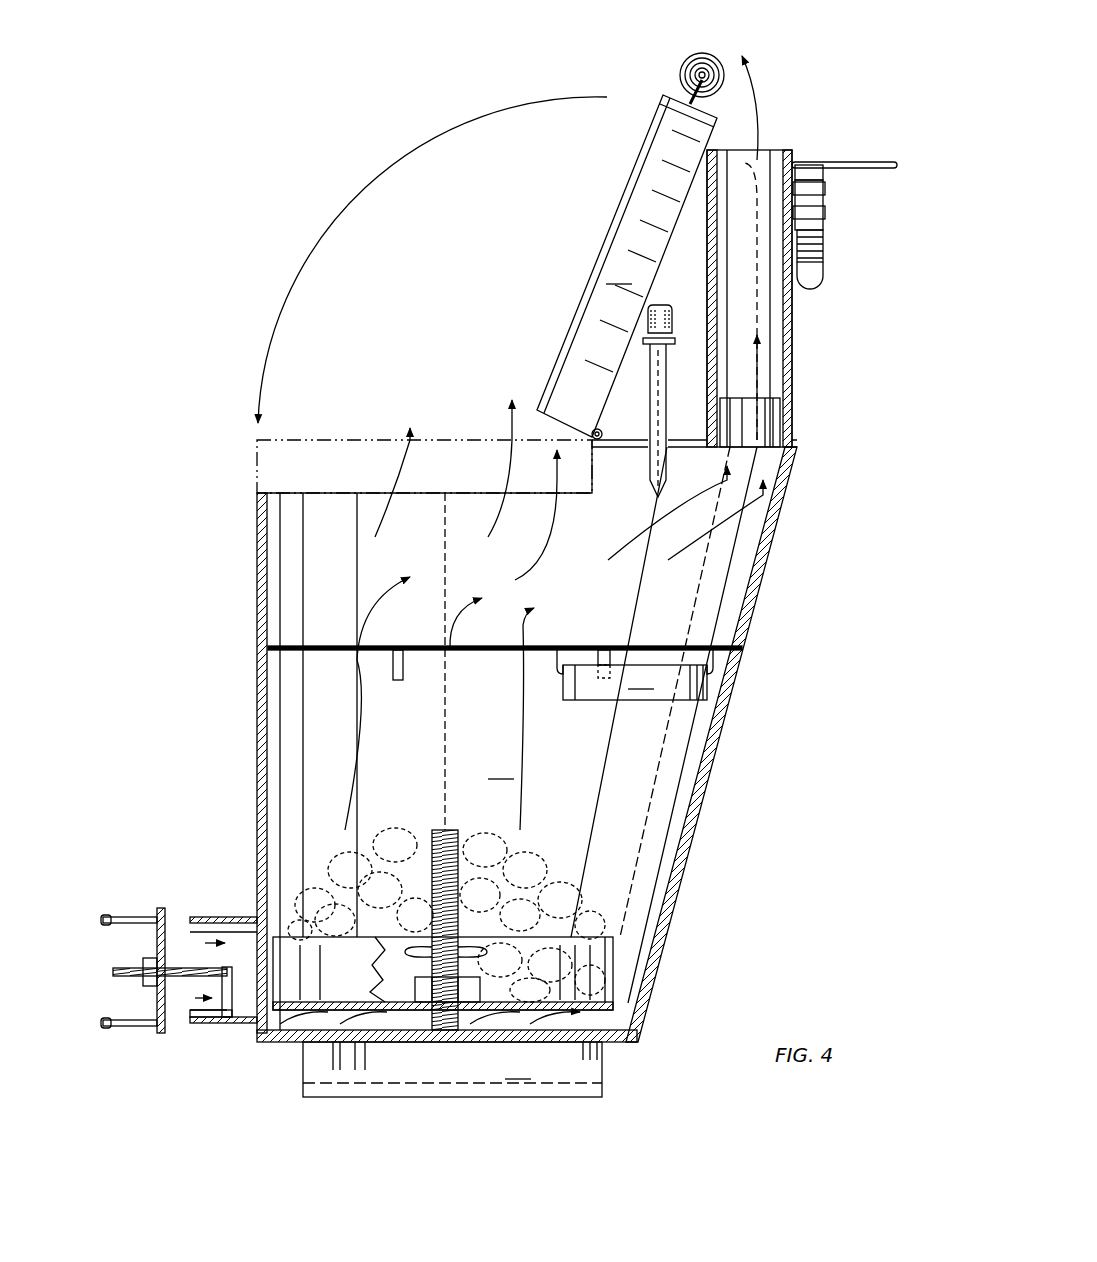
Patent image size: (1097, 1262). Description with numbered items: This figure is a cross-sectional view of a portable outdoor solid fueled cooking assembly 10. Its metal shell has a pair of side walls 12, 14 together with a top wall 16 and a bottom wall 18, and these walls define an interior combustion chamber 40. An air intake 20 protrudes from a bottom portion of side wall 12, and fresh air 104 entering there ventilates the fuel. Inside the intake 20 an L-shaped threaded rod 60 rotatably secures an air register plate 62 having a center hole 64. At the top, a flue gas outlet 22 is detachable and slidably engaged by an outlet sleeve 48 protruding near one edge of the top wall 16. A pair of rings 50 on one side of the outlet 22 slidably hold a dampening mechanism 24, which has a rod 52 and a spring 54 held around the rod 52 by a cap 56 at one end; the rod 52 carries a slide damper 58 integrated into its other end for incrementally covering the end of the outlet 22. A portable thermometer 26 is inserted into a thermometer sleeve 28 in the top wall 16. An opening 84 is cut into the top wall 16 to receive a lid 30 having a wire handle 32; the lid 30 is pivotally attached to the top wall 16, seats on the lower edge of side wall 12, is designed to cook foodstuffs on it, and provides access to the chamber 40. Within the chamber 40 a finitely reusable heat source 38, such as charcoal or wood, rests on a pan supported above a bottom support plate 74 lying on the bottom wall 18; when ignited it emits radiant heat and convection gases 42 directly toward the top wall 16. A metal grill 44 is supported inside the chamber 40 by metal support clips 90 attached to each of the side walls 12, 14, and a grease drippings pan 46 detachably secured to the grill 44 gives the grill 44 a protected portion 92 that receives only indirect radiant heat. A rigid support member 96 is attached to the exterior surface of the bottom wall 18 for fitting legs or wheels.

The portable outdoor solid fueled cooking assembly 10 is at (218, 323).
The side wall 12 is at (262, 760).
The side wall 14 is at (715, 760).
The top wall 16 is at (638, 413).
The bottom wall 18 is at (617, 1047).
The air intake 20 is at (250, 915).
The flue gas outlet 22 is at (793, 340).
The dampening mechanism 24 is at (893, 150).
The portable thermometer 26 is at (690, 283).
The thermometer sleeve 28 is at (668, 380).
The lid 30 is at (627, 266).
The wire handle 32 is at (682, 70).
The finitely reusable heat source 38 is at (607, 907).
The interior combustion chamber 40 is at (443, 761).
The convection gases 42 is at (412, 440).
The metal grill 44 is at (280, 645).
The grease drippings pan 46 is at (635, 682).
The outlet sleeve 48 is at (786, 420).
The pair of rings 50 is at (828, 215).
The rod 52 is at (835, 170).
The spring 54 is at (825, 248).
The cap 56 is at (820, 285).
The slide damper 58 is at (808, 165).
The L-shaped threaded rod 60 is at (113, 972).
The air register plate 62 is at (155, 940).
The center hole 64 is at (155, 1000).
The bottom support plate 74 is at (628, 1022).
The opening 84 is at (270, 470).
The metal support clips 90 is at (398, 680).
The protected portion 92 is at (712, 655).
The rigid support member 96 is at (452, 1069).
The fresh air 104 is at (190, 928).